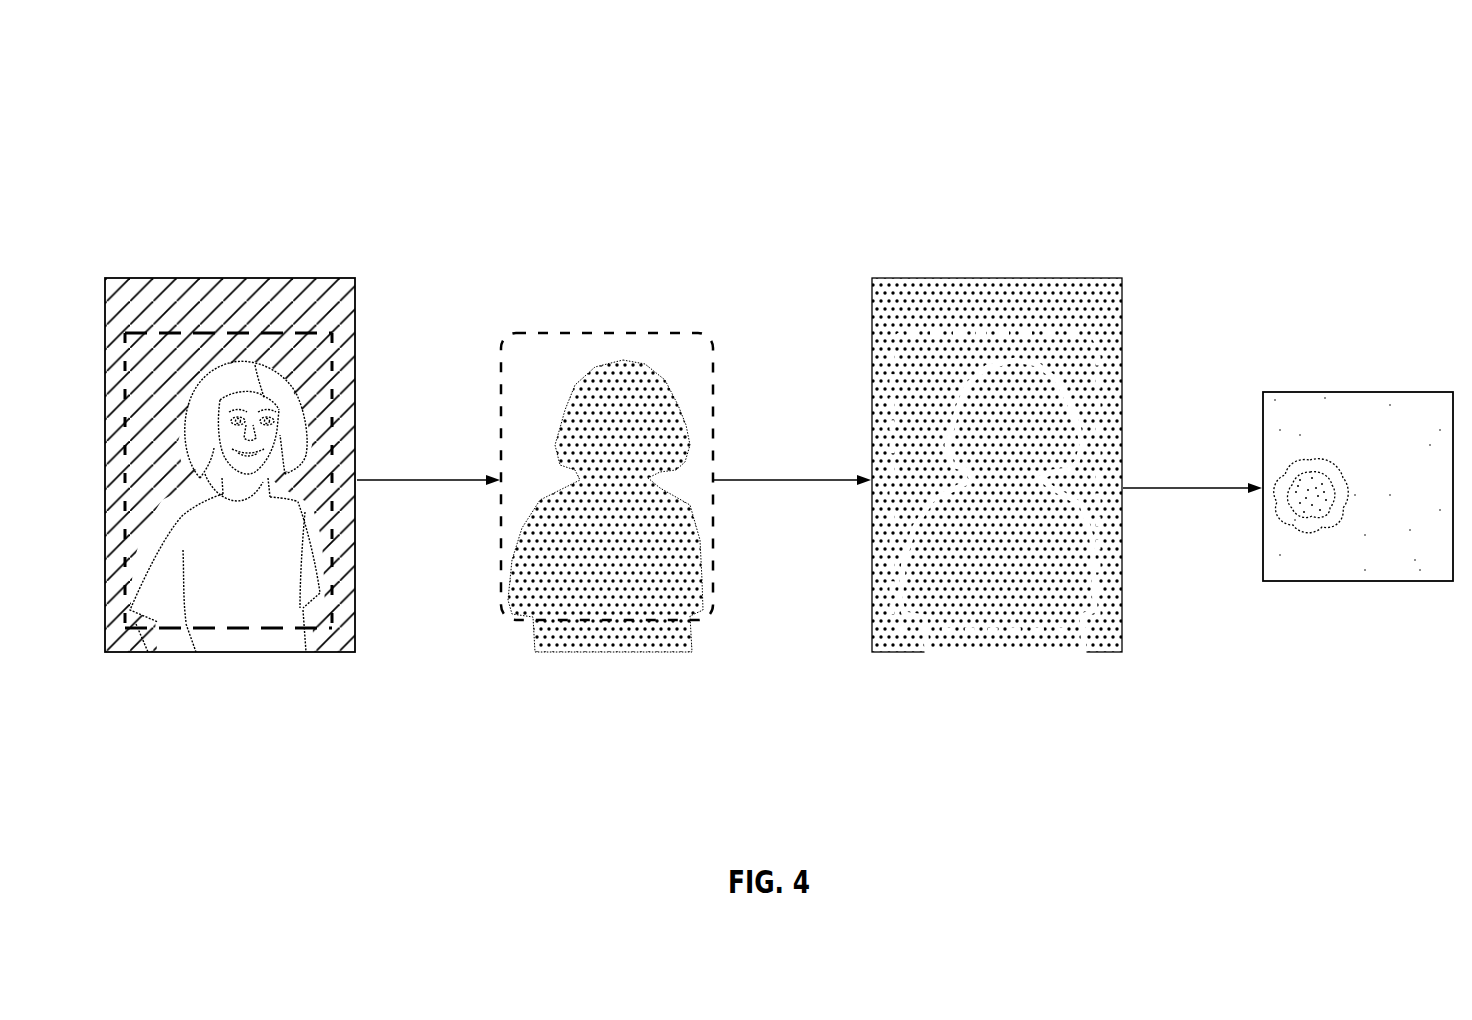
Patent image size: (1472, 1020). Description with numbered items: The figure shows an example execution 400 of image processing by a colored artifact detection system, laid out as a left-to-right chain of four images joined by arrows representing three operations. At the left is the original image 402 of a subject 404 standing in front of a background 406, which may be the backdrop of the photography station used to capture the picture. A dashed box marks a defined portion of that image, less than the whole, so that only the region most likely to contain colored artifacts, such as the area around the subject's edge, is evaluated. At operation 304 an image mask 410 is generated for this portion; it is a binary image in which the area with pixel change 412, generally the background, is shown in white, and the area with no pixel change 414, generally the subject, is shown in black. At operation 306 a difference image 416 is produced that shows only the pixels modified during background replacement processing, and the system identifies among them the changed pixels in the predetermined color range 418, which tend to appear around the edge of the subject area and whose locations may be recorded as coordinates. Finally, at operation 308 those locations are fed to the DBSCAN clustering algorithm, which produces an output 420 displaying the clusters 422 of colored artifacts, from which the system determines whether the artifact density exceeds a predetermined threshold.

The example execution 400 is at (180, 117).
The original image 402 is at (263, 252).
The subject 404 is at (146, 597).
The background 406 is at (303, 375).
The image mask 410 is at (584, 279).
The area with pixel change 412 is at (680, 347).
The area with no pixel change 414 is at (664, 623).
The difference image 416 is at (928, 252).
The changed pixels in the predetermined color range 418 is at (1063, 605).
The output 420 is at (1348, 336).
The clusters 422 is at (1298, 530).
The operation 304 is at (445, 470).
The operation 306 is at (797, 471).
The operation 308 is at (1207, 476).